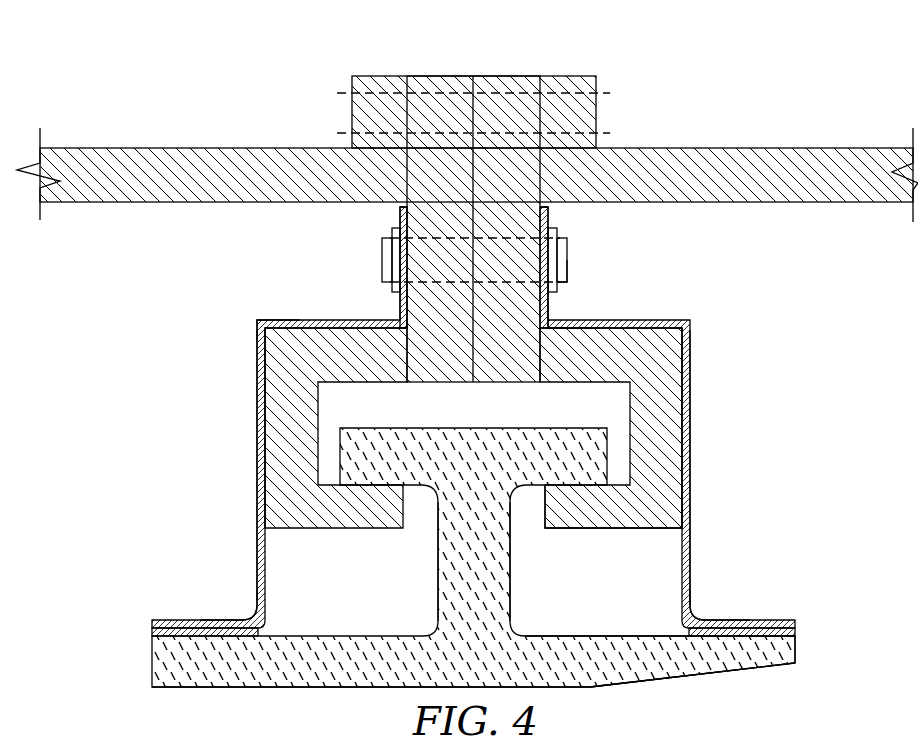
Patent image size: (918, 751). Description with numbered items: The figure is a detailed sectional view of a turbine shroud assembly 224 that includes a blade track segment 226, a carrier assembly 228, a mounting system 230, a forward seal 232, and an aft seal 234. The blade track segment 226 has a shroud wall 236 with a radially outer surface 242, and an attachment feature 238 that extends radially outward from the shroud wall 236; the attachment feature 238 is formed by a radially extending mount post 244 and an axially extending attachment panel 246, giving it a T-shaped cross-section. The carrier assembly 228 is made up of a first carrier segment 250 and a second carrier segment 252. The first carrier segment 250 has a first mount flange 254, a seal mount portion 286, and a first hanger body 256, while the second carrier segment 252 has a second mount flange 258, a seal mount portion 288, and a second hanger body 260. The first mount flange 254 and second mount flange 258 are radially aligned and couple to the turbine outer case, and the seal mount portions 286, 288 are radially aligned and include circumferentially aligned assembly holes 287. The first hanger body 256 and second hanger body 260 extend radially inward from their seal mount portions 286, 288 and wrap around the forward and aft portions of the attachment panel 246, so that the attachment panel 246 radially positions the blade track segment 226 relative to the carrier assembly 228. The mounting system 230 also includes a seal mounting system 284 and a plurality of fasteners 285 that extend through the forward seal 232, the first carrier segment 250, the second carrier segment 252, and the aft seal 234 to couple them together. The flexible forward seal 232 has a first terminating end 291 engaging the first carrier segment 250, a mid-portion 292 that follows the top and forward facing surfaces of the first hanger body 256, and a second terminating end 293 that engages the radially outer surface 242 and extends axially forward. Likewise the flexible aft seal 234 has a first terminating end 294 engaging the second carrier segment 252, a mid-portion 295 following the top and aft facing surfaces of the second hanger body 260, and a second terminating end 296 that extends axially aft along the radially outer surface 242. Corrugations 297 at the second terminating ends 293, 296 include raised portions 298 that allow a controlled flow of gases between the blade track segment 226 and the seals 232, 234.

The turbine shroud assembly 224 is at (712, 98).
The blade track segment 226 is at (705, 678).
The carrier assembly 228 is at (606, 293).
The mounting system 230 is at (598, 267).
The forward seal 232 is at (257, 478).
The aft seal 234 is at (692, 522).
The shroud wall 236 is at (783, 653).
The attachment feature 238 is at (513, 563).
The radially outer surface 242 is at (592, 636).
The mount post 244 is at (452, 575).
The attachment panel 246 is at (595, 450).
The first carrier segment 250 is at (252, 348).
The second carrier segment 252 is at (702, 330).
The first mount flange 254 is at (448, 100).
The first hanger body 256 is at (285, 413).
The second mount flange 258 is at (515, 100).
The second hanger body 260 is at (665, 468).
The seal mounting system 284 is at (378, 273).
The fasteners 285 is at (566, 260).
The seal mount portion 286 is at (448, 262).
The assembly holes 287 is at (443, 217).
The seal mount portion 288 is at (521, 252).
The first terminating end 291 is at (378, 256).
The mid-portion 292 is at (255, 315).
The second terminating end 293 is at (197, 609).
The first terminating end 294 is at (574, 285).
The mid-portion 295 is at (702, 364).
The second terminating end 296 is at (724, 601).
The corrugations 297 is at (148, 625).
The raised portions 298 is at (785, 622).